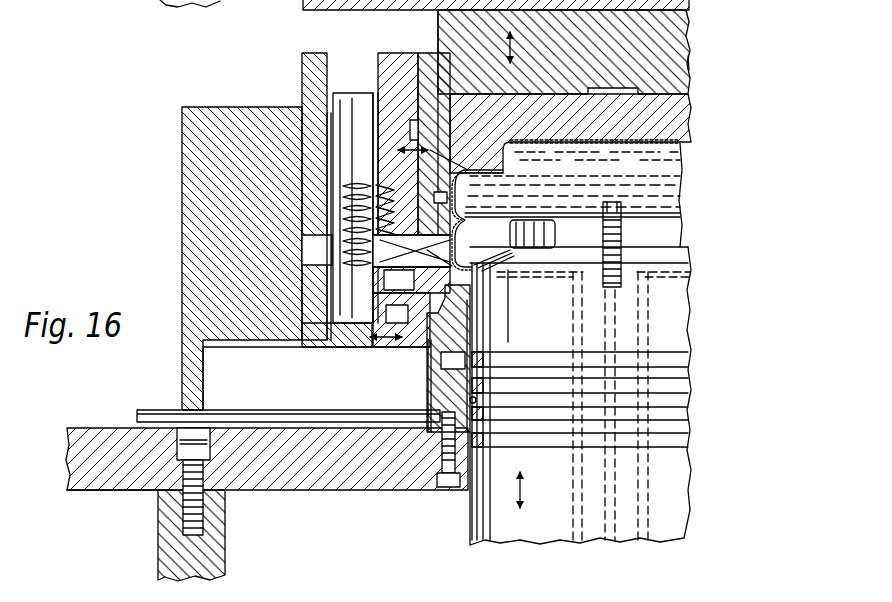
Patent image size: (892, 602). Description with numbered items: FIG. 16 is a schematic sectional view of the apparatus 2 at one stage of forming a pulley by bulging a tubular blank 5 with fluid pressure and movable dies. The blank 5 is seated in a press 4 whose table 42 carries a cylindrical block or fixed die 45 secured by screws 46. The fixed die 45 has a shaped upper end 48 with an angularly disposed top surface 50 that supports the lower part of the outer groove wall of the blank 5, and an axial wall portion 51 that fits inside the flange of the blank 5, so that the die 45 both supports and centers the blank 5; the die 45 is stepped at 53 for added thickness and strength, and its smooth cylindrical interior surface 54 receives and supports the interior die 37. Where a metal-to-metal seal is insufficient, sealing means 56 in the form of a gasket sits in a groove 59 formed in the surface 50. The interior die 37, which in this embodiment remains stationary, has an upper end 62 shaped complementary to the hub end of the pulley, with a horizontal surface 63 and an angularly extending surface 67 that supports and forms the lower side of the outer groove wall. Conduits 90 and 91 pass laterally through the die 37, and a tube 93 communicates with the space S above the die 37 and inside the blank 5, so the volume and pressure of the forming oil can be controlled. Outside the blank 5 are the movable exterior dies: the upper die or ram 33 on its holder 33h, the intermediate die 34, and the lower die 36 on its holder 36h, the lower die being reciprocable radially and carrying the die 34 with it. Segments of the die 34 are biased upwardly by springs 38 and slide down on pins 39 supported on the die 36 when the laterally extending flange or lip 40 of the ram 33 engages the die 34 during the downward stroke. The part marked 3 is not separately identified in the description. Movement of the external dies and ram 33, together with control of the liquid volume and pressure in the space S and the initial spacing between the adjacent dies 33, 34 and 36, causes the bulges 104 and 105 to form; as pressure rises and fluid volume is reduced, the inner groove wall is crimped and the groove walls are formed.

The apparatus 2 is at (96, 428).
The mold body 3 is at (692, 48).
The press 4 is at (157, 534).
The blank 5 is at (684, 150).
The space S is at (664, 197).
The upper die or ram 33 is at (692, 108).
The holder 33h is at (690, 64).
The intermediate die 34 is at (408, 54).
The holder 36h is at (182, 229).
The lower die 36 is at (352, 346).
The interior die 37 is at (470, 519).
The springs 38 is at (374, 248).
The pins 39 is at (356, 93).
The flange or lip 40 is at (304, 8).
The table 42 is at (98, 490).
The fixed die 45 is at (427, 376).
The screws 46 is at (447, 488).
The upper end 48 is at (470, 371).
The top surface 50 is at (474, 283).
The axial wall portion 51 is at (368, 344).
The step 53 is at (425, 344).
The interior surface 54 is at (469, 399).
The sealing means 56 is at (474, 291).
The groove 59 is at (474, 301).
The upper end 62 is at (692, 252).
The horizontal surface 63 is at (668, 215).
The angularly extending surface 67 is at (503, 234).
The conduit 90 is at (578, 486).
The conduit 91 is at (650, 484).
The tube 93 is at (626, 223).
The bulge 104 is at (452, 165).
The bulge 105 is at (411, 280).